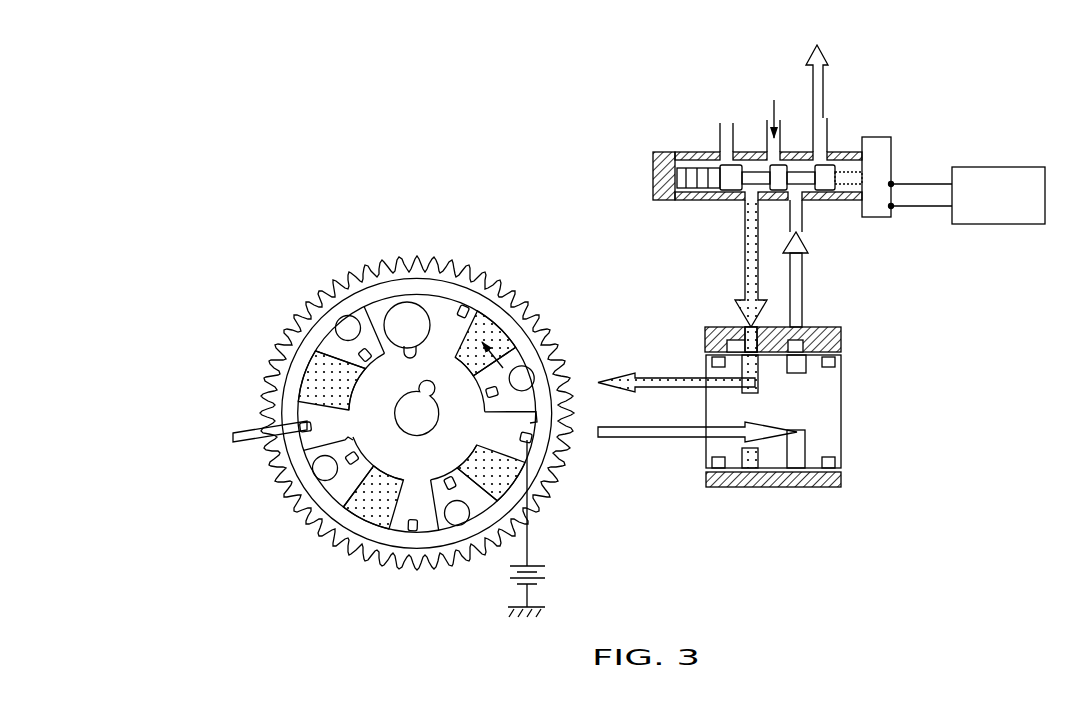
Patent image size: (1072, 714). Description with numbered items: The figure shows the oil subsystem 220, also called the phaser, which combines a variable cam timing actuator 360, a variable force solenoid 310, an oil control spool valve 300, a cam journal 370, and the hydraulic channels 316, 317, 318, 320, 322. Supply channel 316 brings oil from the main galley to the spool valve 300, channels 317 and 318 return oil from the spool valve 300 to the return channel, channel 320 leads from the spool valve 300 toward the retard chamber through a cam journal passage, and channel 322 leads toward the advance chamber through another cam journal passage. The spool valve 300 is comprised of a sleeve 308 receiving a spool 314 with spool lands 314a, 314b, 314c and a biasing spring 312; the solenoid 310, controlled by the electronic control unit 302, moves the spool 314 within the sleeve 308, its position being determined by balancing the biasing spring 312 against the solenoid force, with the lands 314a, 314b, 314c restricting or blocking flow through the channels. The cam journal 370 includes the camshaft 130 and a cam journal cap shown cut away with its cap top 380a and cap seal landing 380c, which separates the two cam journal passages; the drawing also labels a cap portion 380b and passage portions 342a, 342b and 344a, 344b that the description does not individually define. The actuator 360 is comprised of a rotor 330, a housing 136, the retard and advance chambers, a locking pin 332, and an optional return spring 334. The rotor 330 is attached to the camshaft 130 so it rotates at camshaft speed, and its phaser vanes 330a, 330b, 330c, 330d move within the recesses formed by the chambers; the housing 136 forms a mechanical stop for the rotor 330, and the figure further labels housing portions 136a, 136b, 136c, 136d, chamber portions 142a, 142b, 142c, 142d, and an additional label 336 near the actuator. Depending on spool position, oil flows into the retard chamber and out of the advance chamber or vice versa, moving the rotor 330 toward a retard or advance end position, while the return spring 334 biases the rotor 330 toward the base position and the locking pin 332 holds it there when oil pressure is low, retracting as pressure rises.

The oil subsystem 220 is at (382, 95).
The oil control spool valve 300 is at (930, 97).
The electronic control unit 302 is at (1000, 167).
The sleeve 308 is at (655, 172).
The variable force solenoid 310 is at (872, 137).
The biasing spring 312 is at (698, 167).
The spool 314 is at (757, 173).
The spool land 314a is at (732, 180).
The spool land 314b is at (783, 167).
The spool land 314c is at (827, 180).
The hydraulic channel 316 is at (770, 120).
The hydraulic channel 317 is at (728, 123).
The hydraulic channel 318 is at (840, 117).
The hydraulic channel 320 is at (757, 240).
The hydraulic channel 322 is at (810, 237).
The camshaft 130 is at (842, 413).
The cap top 380a is at (842, 343).
The end plate 380b is at (842, 478).
The cap seal landing 380c is at (747, 333).
The passage 342a is at (747, 373).
The passage 342b is at (742, 448).
The piston 344a is at (803, 453).
The piston 344b is at (798, 372).
The cam journal 370 is at (940, 360).
The variable cam timing actuator 360 is at (355, 243).
The housing 136 is at (302, 334).
The housing shoe 136a is at (323, 338).
The housing shoe 136b is at (325, 485).
The housing shoe 136c is at (475, 508).
The housing shoe 136d is at (533, 395).
The fluid chamber 142a is at (321, 380).
The fluid chamber 142b is at (357, 505).
The fluid chamber 142c is at (507, 482).
The fluid chamber 142d is at (490, 333).
The rotor 330 is at (474, 424).
The phaser vane 330a is at (440, 297).
The phaser vane 330b is at (307, 412).
The phaser vane 330c is at (398, 523).
The phaser vane 330d is at (528, 423).
The locking pin 332 is at (232, 437).
The return spring 334 is at (553, 575).
The rotation direction 336 is at (481, 376).